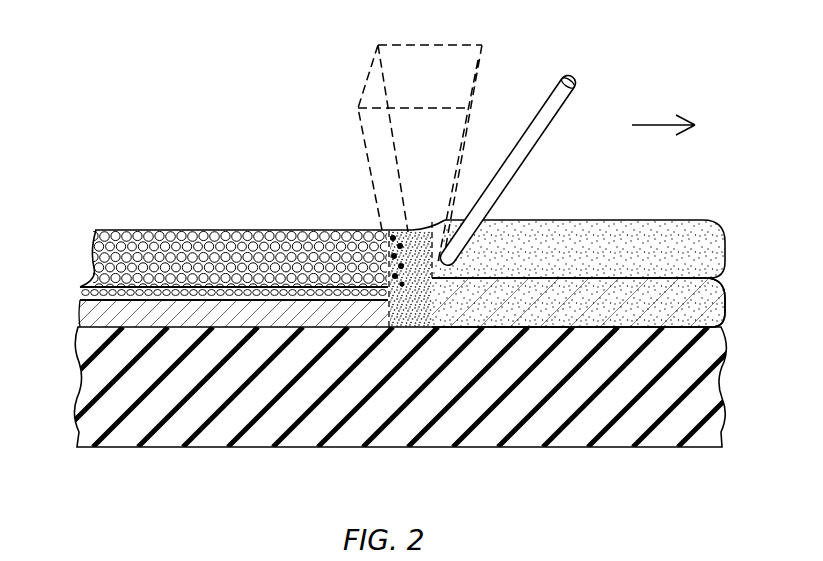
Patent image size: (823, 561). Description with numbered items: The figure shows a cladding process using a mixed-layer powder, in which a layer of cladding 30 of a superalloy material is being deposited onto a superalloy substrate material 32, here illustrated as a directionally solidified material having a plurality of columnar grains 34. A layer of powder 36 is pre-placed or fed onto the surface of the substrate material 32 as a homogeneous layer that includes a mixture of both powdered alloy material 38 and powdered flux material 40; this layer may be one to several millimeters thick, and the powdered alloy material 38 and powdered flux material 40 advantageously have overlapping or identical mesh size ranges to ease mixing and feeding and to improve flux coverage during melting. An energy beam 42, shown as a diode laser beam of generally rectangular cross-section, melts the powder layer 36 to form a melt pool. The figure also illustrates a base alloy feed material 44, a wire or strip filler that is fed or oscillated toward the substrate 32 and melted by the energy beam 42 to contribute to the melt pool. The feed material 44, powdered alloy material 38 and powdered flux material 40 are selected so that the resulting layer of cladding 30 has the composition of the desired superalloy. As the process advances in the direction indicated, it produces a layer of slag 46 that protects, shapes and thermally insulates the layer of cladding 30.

The layer of cladding 30 is at (90, 313).
The superalloy substrate material 32 is at (400, 409).
The columnar grains 34 is at (277, 447).
The layer of powder 36 is at (712, 262).
The powdered alloy material 38 is at (648, 208).
The powdered flux material 40 is at (584, 251).
The energy beam 42 is at (433, 44).
The base alloy feed material 44 is at (540, 143).
The layer of slag 46 is at (100, 260).